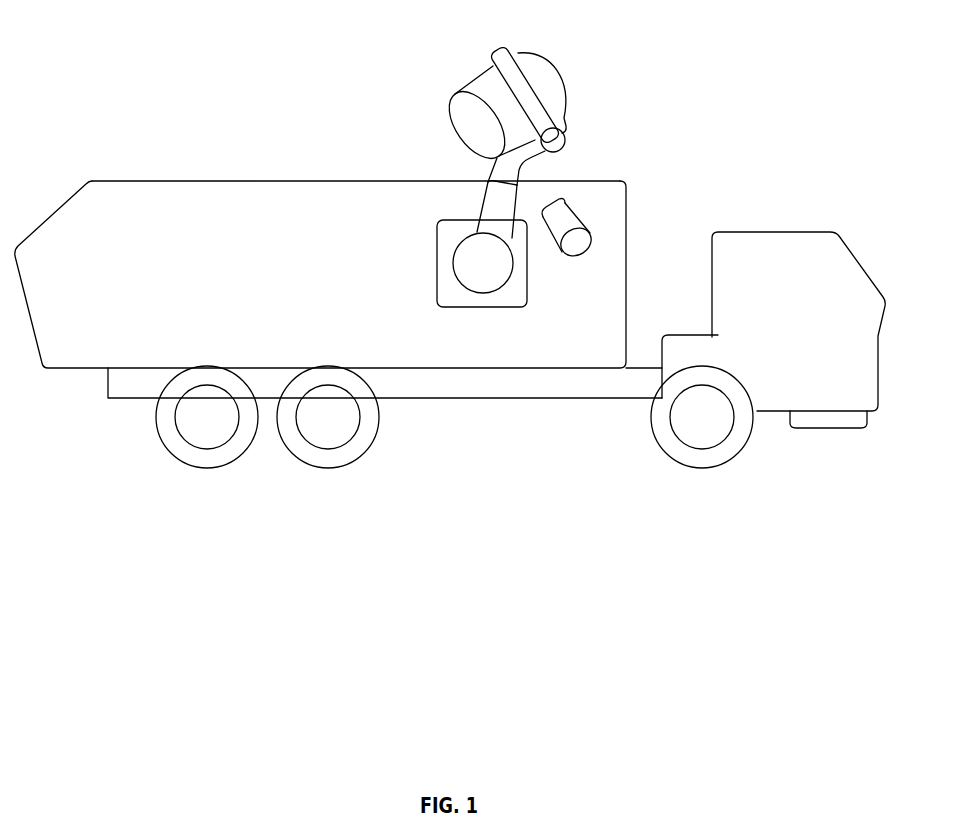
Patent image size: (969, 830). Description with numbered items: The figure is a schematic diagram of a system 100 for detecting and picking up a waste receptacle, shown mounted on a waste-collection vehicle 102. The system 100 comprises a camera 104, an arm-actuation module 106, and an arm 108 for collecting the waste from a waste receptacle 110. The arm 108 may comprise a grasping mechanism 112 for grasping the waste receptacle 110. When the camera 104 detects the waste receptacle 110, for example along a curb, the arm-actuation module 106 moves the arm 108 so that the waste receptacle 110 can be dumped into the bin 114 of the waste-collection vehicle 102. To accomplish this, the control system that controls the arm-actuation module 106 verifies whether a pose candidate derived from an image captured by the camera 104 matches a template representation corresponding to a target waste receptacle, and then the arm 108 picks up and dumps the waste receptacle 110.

The system 100 is at (513, 158).
The waste-collection vehicle 102 is at (450, 293).
The camera 104 is at (583, 221).
The arm-actuation module 106 is at (437, 263).
The arm 108 is at (492, 208).
The waste receptacle 110 is at (487, 89).
The grasping mechanism 112 is at (525, 97).
The bin 114 is at (395, 177).